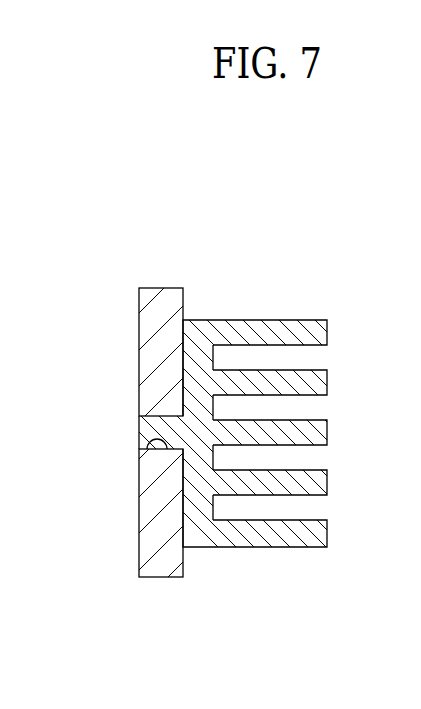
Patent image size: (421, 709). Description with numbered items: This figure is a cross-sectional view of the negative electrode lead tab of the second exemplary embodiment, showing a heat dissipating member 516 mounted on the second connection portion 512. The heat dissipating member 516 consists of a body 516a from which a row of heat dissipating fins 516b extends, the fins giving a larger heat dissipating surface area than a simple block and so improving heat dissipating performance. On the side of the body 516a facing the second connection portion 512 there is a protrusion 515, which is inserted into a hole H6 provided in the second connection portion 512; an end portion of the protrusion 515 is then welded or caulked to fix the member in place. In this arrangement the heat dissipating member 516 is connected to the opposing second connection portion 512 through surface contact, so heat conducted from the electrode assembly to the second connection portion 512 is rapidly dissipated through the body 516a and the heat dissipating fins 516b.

The second connection portion 512 is at (160, 356).
The protrusion 515 is at (152, 425).
The hole H6 is at (146, 452).
The heat dissipating member 516 is at (210, 491).
The body 516a is at (198, 508).
The heat dissipating fins 516b is at (300, 535).